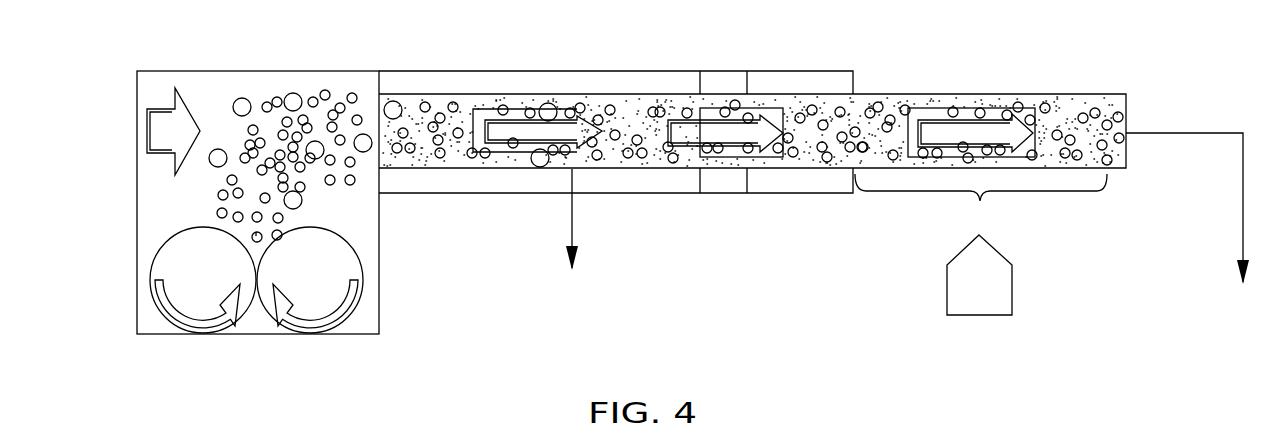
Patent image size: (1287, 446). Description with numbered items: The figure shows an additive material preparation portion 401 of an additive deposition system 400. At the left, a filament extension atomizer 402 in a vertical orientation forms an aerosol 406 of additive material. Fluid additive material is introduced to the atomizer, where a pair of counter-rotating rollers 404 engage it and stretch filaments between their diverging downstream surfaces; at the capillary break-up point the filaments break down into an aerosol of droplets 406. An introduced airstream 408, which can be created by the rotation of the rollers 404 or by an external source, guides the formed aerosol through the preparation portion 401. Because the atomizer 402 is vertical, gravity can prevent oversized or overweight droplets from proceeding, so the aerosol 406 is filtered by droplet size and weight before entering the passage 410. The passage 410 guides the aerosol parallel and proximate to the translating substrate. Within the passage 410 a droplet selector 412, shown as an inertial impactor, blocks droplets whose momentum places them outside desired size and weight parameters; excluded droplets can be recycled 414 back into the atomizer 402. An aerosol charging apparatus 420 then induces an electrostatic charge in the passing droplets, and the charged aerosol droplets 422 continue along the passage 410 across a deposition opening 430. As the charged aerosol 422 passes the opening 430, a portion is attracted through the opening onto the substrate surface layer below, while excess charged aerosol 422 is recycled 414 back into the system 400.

The additive deposition system 400 is at (132, 117).
The additive material preparation portion 401 is at (132, 212).
The filament extension atomizer 402 is at (255, 335).
The counter-rotating rollers 404 is at (200, 312).
The aerosol of additive material 406 is at (292, 101).
The airstream 408 is at (177, 121).
The passage 410 is at (456, 90).
The droplet selector 412 is at (625, 93).
The recycle 414 is at (572, 218).
The aerosol charging apparatus 420 is at (722, 70).
The charged aerosol droplets 422 is at (890, 108).
The deposition opening 430 is at (981, 205).